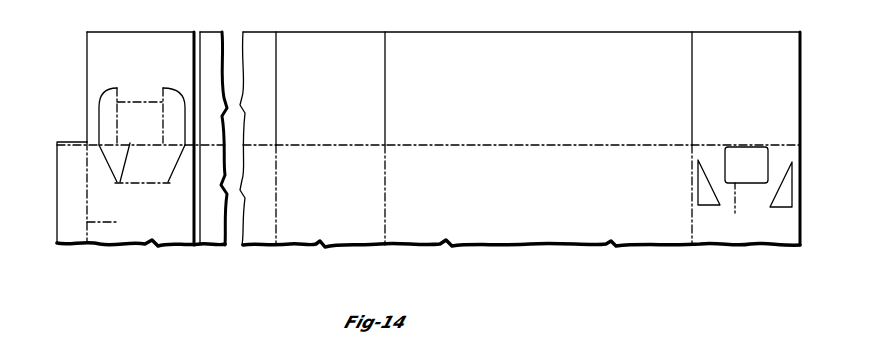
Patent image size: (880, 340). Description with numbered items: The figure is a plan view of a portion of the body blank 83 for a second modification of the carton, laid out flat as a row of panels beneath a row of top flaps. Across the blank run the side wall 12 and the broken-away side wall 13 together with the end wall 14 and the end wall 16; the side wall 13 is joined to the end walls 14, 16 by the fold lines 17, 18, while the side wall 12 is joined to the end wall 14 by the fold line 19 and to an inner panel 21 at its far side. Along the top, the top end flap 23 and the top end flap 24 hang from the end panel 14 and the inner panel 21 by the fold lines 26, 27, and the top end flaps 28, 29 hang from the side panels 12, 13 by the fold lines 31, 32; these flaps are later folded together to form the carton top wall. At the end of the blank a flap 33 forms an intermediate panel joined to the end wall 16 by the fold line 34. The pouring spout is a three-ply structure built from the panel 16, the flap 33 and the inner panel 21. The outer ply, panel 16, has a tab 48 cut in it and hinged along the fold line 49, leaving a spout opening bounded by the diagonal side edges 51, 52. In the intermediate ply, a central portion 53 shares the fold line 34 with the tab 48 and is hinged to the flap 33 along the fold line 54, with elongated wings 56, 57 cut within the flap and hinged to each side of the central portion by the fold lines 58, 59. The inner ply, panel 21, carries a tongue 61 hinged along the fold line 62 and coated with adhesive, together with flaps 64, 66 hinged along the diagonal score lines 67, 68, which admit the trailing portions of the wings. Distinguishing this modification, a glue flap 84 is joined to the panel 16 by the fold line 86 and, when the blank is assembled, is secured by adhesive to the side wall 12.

The side wall 12 is at (518, 210).
The side wall 13 is at (258, 212).
The end wall 14 is at (337, 210).
The end wall 16 is at (124, 242).
The fold line 17 is at (277, 172).
The fold line 18 is at (252, 254).
The fold line 19 is at (386, 190).
The inner panel 21 is at (734, 243).
The top end flap 23 is at (355, 41).
The top end flap 24 is at (750, 41).
The fold line 26 is at (318, 147).
The fold line 27 is at (712, 145).
The top end flap 28 is at (523, 41).
The top end flap 29 is at (260, 41).
The fold line 31 is at (450, 148).
The fold line 32 is at (257, 139).
The flap 33 is at (130, 35).
The fold line 34 is at (119, 183).
The tab 48 is at (142, 163).
The fold line 49 is at (130, 184).
The diagonal side edge 51 is at (104, 162).
The diagonal side edge 52 is at (173, 175).
The central portion 53 is at (128, 110).
The fold line 54 is at (143, 100).
The wing 56 is at (108, 125).
The wing 57 is at (177, 126).
The fold line 58 is at (118, 111).
The fold line 59 is at (187, 107).
The tongue 61 is at (742, 150).
The fold line 62 is at (735, 213).
The flap 64 is at (702, 197).
The flap 66 is at (783, 203).
The diagonal score line 67 is at (702, 181).
The diagonal score line 68 is at (775, 192).
The body blank 83 is at (170, 250).
The glue flap 84 is at (68, 211).
The fold line 86 is at (114, 225).